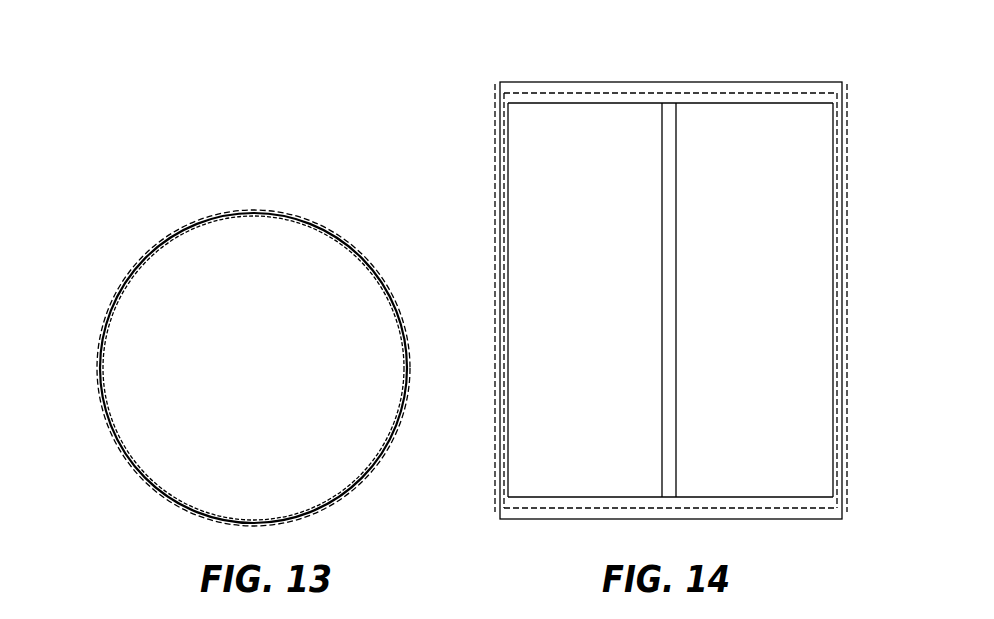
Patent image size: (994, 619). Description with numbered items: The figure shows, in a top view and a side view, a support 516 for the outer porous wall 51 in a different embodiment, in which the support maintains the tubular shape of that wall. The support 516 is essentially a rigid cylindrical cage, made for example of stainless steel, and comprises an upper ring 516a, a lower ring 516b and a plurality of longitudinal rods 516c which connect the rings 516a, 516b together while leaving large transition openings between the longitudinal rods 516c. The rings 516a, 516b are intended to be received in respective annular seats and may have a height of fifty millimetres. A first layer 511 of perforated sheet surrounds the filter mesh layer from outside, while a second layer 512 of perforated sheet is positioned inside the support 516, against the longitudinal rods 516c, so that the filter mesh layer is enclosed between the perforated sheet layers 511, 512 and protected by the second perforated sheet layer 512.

In FIG. 13, the outer porous wall 51 is at (233, 325).
In FIG. 14, the outer porous wall 51 is at (632, 297).
In FIG. 13, the first layer of perforated sheet 511 is at (141, 263).
In FIG. 14, the first layer of perforated sheet 511 is at (496, 399).
In FIG. 13, the second layer of perforated sheet 512 is at (110, 402).
In FIG. 14, the second layer of perforated sheet 512 is at (506, 340).
In FIG. 14, the support 516 is at (632, 297).
In FIG. 13, the upper ring 516a is at (108, 320).
In FIG. 14, the upper ring 516a is at (620, 89).
In FIG. 14, the lower ring 516b is at (580, 511).
In FIG. 14, the longitudinal rods 516c is at (833, 353).